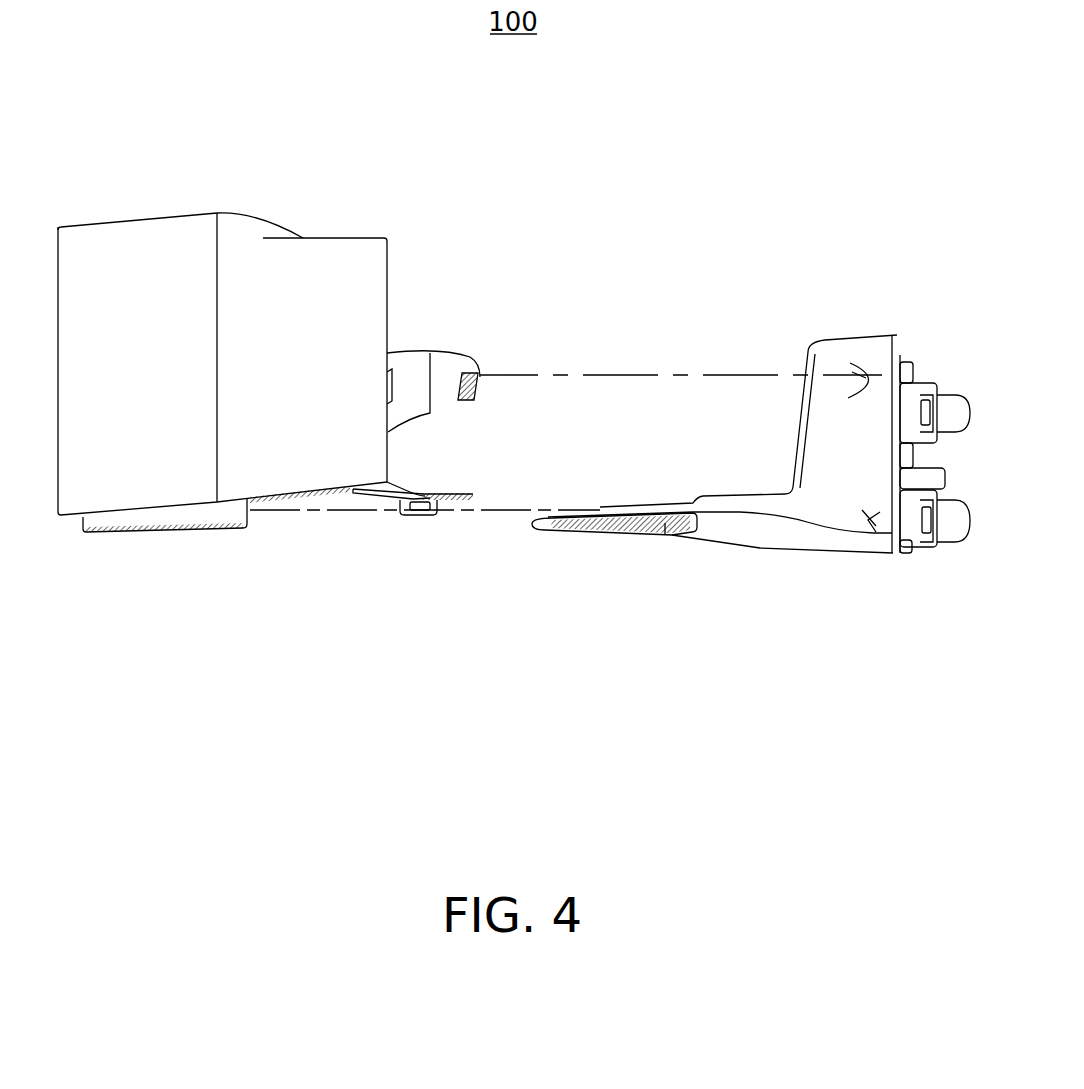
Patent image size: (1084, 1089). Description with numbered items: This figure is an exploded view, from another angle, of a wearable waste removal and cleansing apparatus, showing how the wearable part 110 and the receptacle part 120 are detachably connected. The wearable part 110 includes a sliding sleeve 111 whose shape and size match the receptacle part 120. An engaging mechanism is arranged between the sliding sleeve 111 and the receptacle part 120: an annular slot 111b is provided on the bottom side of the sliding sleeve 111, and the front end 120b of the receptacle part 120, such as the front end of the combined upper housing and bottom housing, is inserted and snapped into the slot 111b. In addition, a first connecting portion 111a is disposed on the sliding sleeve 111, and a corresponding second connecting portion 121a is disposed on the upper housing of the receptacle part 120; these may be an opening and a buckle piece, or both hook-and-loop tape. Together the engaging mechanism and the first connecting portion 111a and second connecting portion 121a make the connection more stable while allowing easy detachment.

The wearable part 110 is at (190, 200).
The sliding sleeve 111 is at (353, 488).
The first connecting portion 111a is at (442, 495).
The slot 111b is at (252, 533).
The receptacle part 120 is at (787, 330).
The front end 120b is at (552, 520).
The second connecting portion 121a is at (872, 527).